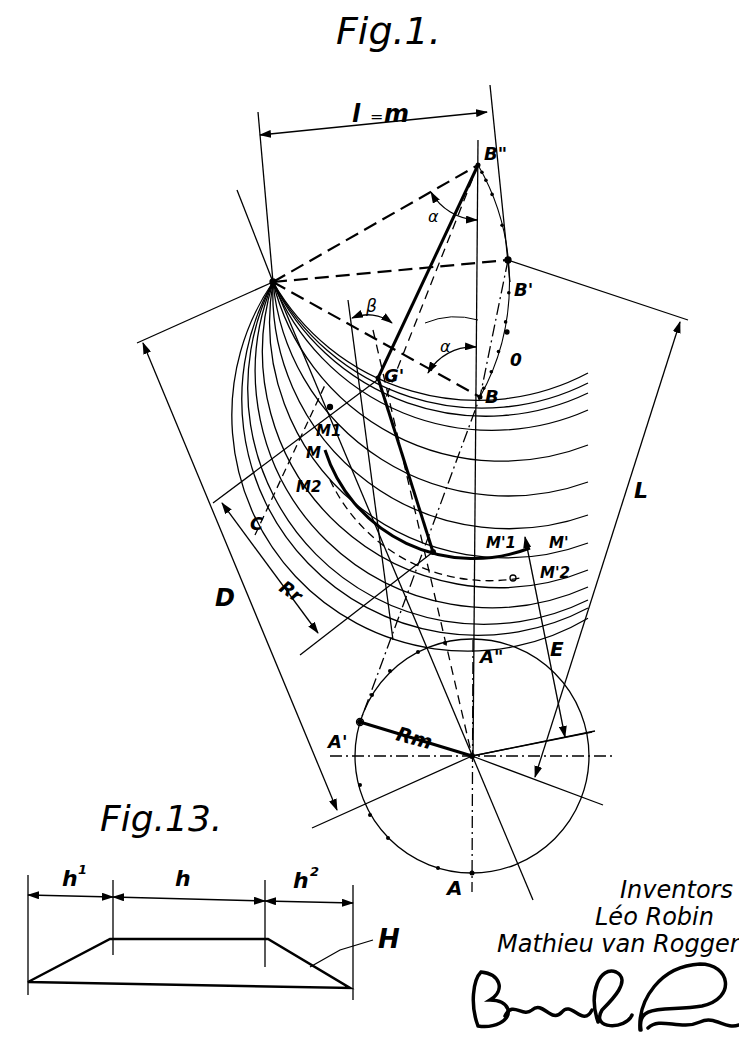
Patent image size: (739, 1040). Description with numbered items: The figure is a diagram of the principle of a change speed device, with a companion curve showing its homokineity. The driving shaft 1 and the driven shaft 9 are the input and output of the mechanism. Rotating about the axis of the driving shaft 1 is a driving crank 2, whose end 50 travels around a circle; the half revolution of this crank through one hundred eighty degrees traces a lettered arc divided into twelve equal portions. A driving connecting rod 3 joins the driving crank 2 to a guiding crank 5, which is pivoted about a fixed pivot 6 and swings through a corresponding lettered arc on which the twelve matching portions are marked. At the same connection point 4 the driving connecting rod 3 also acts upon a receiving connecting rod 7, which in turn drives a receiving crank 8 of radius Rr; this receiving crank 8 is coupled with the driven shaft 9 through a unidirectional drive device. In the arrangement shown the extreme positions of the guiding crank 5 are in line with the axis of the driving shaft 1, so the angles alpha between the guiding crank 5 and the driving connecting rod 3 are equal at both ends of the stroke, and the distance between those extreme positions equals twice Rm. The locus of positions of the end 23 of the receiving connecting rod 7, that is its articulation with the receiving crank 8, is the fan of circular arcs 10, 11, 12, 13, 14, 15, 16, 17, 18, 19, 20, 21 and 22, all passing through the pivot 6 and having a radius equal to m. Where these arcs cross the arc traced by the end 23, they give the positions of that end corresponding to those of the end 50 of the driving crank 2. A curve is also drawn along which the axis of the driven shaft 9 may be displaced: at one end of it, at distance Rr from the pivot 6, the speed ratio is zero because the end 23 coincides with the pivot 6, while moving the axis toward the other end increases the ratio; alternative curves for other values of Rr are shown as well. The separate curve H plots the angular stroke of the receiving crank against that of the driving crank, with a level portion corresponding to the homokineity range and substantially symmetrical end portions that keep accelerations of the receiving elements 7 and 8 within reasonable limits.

The driving shaft 1 is at (500, 748).
The driving crank 2 is at (430, 762).
The driving connecting rod 3 is at (620, 419).
The connection point 4 is at (519, 247).
The guiding crank 5 is at (412, 266).
The pivot 6 is at (282, 267).
The receiving connecting rod 7 is at (512, 332).
The receiving crank 8 is at (270, 568).
The driven shaft 9 is at (470, 523).
The circular arc 10 is at (418, 466).
The circular arc 11 is at (426, 458).
The circular arc 12 is at (429, 453).
The circular arc 13 is at (432, 445).
The circular arc 14 is at (436, 435).
The circular arc 15 is at (440, 420).
The circular arc 16 is at (442, 405).
The circular arc 17 is at (442, 389).
The circular arc 18 is at (442, 371).
The circular arc 19 is at (442, 356).
The circular arc 20 is at (442, 349).
The circular arc 21 is at (441, 345).
The circular arc 22 is at (441, 341).
The end of receiving connecting rod 23 is at (330, 405).
The end of driving crank 50 is at (355, 718).